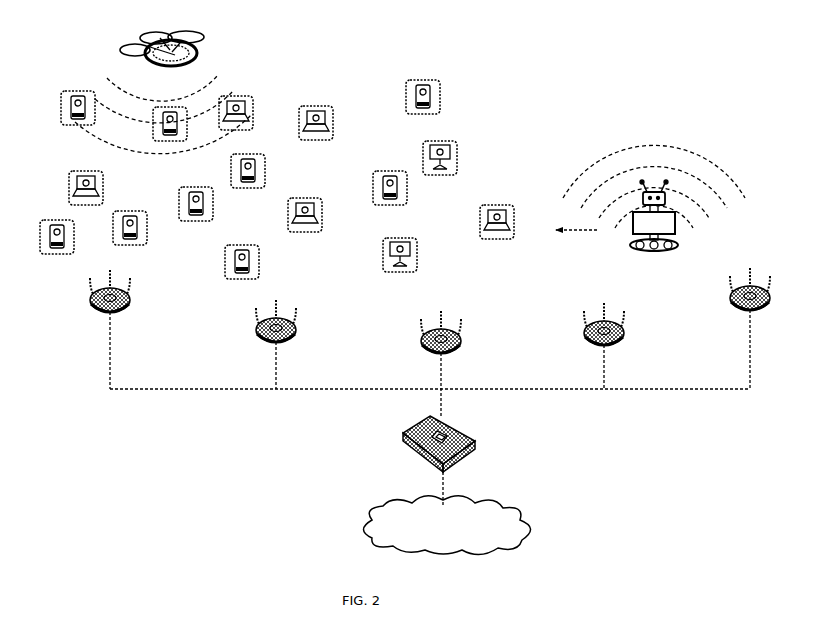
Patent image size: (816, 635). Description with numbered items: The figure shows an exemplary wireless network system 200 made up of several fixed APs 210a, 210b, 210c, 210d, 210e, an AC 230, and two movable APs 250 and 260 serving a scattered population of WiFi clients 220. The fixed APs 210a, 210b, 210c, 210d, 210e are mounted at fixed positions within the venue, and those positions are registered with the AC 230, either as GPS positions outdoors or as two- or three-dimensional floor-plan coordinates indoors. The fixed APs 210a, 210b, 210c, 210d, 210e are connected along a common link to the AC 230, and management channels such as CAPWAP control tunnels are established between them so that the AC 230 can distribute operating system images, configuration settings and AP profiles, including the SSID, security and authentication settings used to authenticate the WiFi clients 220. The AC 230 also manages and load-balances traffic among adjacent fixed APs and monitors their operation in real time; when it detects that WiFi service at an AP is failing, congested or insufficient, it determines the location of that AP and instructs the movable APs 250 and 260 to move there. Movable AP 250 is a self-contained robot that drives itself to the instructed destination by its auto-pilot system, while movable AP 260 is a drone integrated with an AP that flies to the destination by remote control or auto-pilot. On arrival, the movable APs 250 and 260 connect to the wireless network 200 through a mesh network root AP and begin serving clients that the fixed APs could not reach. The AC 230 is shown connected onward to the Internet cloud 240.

The wireless network system 200 is at (420, 44).
The fixed AP 210a is at (88, 303).
The fixed AP 210b is at (253, 338).
The fixed AP 210c is at (415, 346).
The fixed AP 210d is at (580, 340).
The fixed AP 210e is at (730, 312).
The WiFi clients 220 is at (492, 145).
The AC 230 is at (402, 445).
The Internet 240 is at (456, 543).
The movable AP 250 is at (640, 262).
The movable AP 260 is at (98, 27).